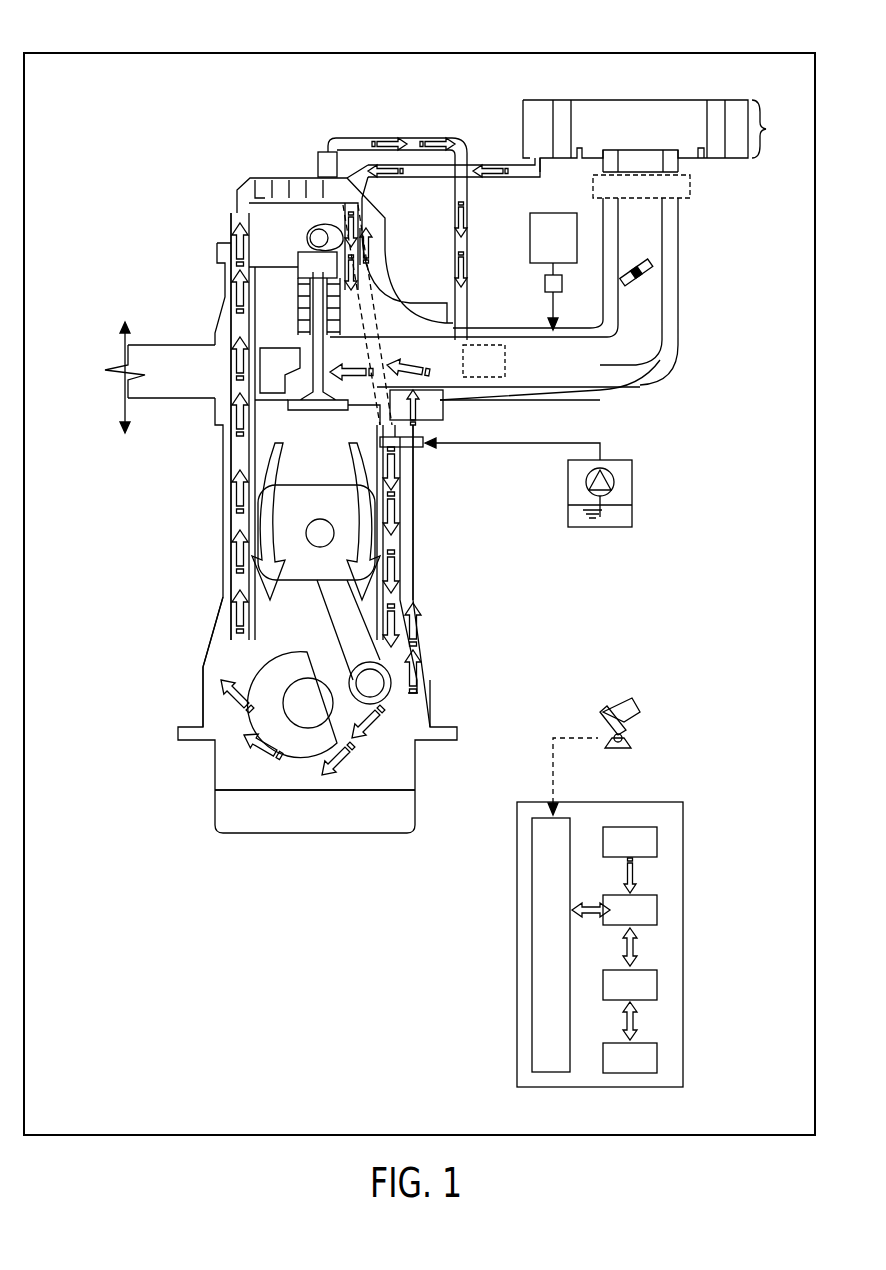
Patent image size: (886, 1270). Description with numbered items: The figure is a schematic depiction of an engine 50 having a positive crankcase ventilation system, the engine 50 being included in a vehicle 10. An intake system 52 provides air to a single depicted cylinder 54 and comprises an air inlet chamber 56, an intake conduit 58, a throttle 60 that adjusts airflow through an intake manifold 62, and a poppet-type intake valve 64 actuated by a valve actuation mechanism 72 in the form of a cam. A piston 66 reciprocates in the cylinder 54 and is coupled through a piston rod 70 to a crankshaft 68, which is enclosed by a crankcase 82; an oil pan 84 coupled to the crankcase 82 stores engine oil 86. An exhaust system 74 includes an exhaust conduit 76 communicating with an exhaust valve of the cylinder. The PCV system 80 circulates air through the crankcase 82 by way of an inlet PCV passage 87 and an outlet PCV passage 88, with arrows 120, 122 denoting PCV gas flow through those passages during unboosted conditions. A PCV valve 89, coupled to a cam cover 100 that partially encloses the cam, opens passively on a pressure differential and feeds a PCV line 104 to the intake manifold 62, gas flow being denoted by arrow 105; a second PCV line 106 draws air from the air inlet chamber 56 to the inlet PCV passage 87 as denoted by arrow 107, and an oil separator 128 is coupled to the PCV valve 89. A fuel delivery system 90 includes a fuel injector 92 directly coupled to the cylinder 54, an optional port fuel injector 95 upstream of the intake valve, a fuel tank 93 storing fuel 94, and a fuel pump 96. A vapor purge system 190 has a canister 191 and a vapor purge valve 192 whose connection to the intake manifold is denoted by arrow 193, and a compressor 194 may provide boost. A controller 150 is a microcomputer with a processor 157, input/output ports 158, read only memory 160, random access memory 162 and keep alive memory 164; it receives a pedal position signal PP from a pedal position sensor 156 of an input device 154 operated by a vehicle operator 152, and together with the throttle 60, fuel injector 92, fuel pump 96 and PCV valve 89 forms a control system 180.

The vehicle 10 is at (413, 52).
The engine 50 is at (84, 126).
The intake system 52 is at (715, 226).
The cylinder 54 is at (321, 470).
The air inlet chamber 56 is at (655, 136).
The intake conduit 58 is at (649, 235).
The throttle 60 is at (630, 280).
The intake manifold 62 is at (617, 366).
The intake valve 64 is at (307, 352).
The piston 66 is at (289, 545).
The crankshaft 68 is at (314, 716).
The piston rod 70 is at (338, 632).
The valve actuation mechanism 72 is at (310, 237).
The exhaust system 74 is at (98, 347).
The exhaust conduit 76 is at (168, 345).
The positive crankcase ventilation system 80 is at (470, 112).
The crankcase 82 is at (203, 697).
The oil pan 84 is at (218, 812).
The engine oil 86 is at (377, 788).
The inlet PCV passage 87 is at (400, 547).
The outlet PCV passage 88 is at (232, 520).
The PCV valve 89 is at (318, 162).
The fuel delivery system 90 is at (705, 470).
The fuel injector 92 is at (410, 452).
The fuel tank 93 is at (633, 470).
The fuel 94 is at (580, 520).
The port fuel injector 95 is at (492, 371).
The fuel pump 96 is at (588, 484).
The cam cover 100 is at (237, 200).
The PCV line 104 is at (342, 137).
The arrow 105 is at (453, 138).
The second PCV line 106 is at (386, 180).
The arrow 107 is at (484, 162).
The arrow 120 is at (396, 510).
The arrow 122 is at (230, 498).
The oil separator 128 is at (232, 172).
The controller 150 is at (668, 800).
The vehicle operator 152 is at (638, 708).
The input device 154 is at (600, 724).
The pedal position sensor 156 is at (632, 740).
The processor 157 is at (657, 911).
The input/output ports 158 is at (573, 830).
The read only memory 160 is at (657, 841).
The random access memory 162 is at (657, 986).
The keep alive memory 164 is at (657, 1059).
The control system 180 is at (745, 1010).
The vapor purge system 190 is at (556, 208).
The canister 191 is at (530, 243).
The vapor purge valve 192 is at (545, 283).
The arrow 193 is at (552, 312).
The compressor 194 is at (690, 188).
The pedal position signal PP is at (551, 776).